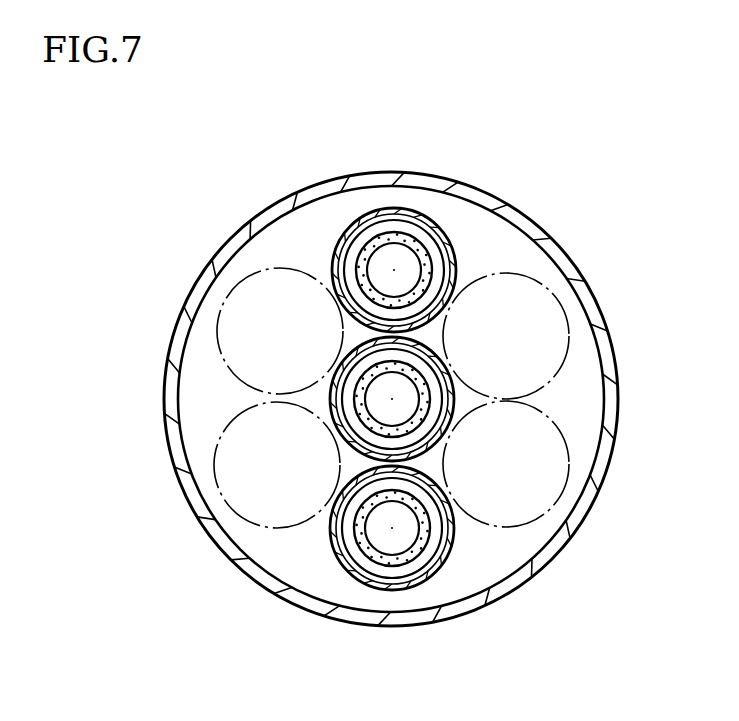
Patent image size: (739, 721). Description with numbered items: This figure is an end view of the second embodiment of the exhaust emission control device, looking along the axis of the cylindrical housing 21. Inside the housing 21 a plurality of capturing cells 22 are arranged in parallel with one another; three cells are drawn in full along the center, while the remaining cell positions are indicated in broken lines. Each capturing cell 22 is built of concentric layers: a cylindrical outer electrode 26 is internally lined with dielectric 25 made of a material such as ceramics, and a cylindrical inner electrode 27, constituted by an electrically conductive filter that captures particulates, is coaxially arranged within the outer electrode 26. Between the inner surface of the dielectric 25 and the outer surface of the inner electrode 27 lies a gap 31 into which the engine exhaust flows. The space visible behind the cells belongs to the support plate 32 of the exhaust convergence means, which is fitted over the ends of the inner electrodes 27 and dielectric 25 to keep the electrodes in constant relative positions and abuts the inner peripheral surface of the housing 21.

The cylindrical housing 21 is at (172, 387).
The capturing cell 22 is at (356, 215).
The dielectric 25 is at (450, 238).
The outer electrode 26 is at (458, 253).
The inner electrode 27 is at (395, 236).
The gap 31 is at (423, 233).
The support plate 32 is at (290, 548).